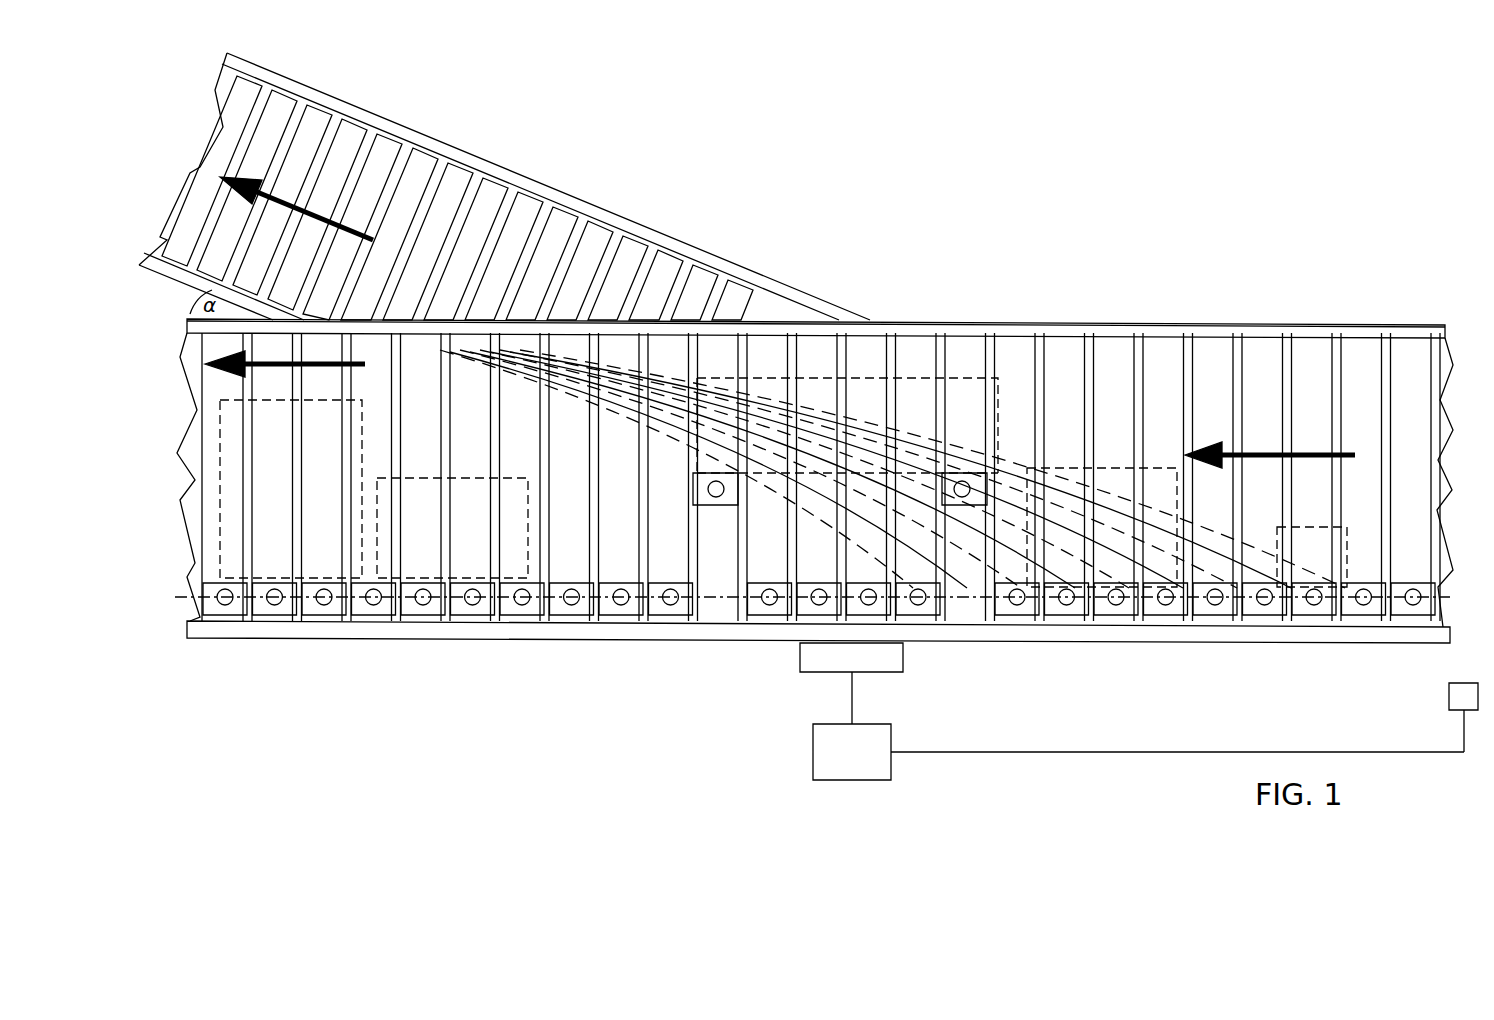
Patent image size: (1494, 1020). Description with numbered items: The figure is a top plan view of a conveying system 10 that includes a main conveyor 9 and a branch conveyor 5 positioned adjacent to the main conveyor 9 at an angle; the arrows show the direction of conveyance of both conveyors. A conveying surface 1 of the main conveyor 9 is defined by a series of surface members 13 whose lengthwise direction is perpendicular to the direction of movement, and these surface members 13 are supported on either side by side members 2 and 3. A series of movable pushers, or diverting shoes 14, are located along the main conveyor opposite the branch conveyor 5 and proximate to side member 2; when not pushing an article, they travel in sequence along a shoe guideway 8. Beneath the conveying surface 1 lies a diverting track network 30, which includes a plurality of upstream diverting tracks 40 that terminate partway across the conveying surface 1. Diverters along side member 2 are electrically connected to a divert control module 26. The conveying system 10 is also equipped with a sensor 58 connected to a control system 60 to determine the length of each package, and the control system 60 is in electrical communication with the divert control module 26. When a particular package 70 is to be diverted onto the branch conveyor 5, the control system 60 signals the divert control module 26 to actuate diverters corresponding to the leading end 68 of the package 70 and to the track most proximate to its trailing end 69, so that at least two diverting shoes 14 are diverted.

The conveying surface 1 is at (1458, 360).
The side member 2 is at (452, 640).
The side member 3 is at (960, 325).
The branch conveyor 5 is at (537, 185).
The shoe guideway 8 is at (927, 603).
The main conveyor 9 is at (1218, 323).
The conveying system 10 is at (1248, 150).
The surface members 13 is at (1308, 352).
The diverting shoes 14 is at (323, 612).
The divert control module 26 is at (800, 655).
The diverting track network 30 is at (672, 486).
The upstream diverting tracks 40 is at (1100, 573).
The sensor 58 is at (1465, 683).
The control system 60 is at (813, 755).
The leading end 68 is at (683, 385).
The trailing end 69 is at (1005, 422).
The package 70 is at (864, 378).